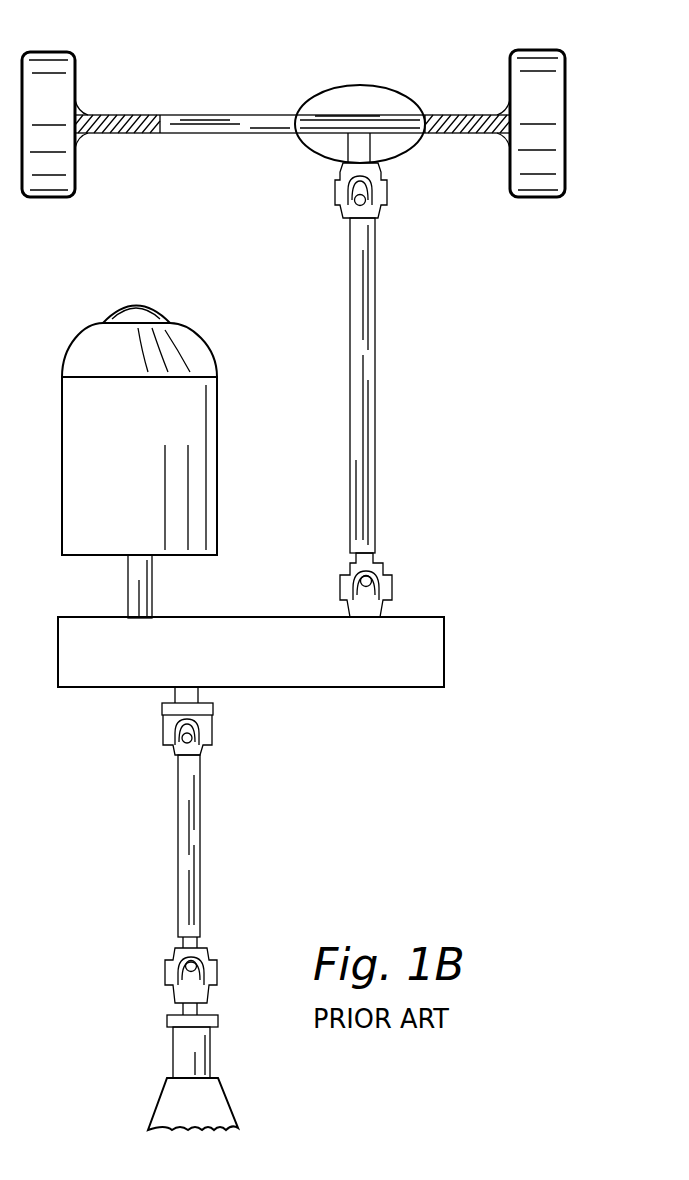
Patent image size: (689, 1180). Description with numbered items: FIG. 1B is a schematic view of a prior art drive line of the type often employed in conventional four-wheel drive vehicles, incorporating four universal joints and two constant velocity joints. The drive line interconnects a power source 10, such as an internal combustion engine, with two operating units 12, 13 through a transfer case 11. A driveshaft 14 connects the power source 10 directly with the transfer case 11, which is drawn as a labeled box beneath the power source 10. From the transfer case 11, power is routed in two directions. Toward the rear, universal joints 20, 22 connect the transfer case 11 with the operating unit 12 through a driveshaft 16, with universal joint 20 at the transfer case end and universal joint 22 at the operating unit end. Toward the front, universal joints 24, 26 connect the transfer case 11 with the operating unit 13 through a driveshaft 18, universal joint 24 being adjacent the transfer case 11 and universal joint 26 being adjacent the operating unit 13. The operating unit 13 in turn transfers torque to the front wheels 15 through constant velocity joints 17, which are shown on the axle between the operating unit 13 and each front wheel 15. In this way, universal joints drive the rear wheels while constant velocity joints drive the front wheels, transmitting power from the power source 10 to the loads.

The power source 10 is at (221, 419).
The transfer case 11 is at (444, 653).
The operating unit 12 is at (158, 1107).
The operating unit 13 is at (375, 85).
The driveshaft 14 is at (152, 590).
The front wheels 15 is at (48, 197).
The driveshaft 16 is at (178, 855).
The constant velocity joints 17 is at (108, 115).
The driveshaft 18 is at (378, 385).
The universal joint 20 is at (213, 726).
The universal joint 22 is at (165, 992).
The universal joint 24 is at (393, 585).
The universal joint 26 is at (388, 190).